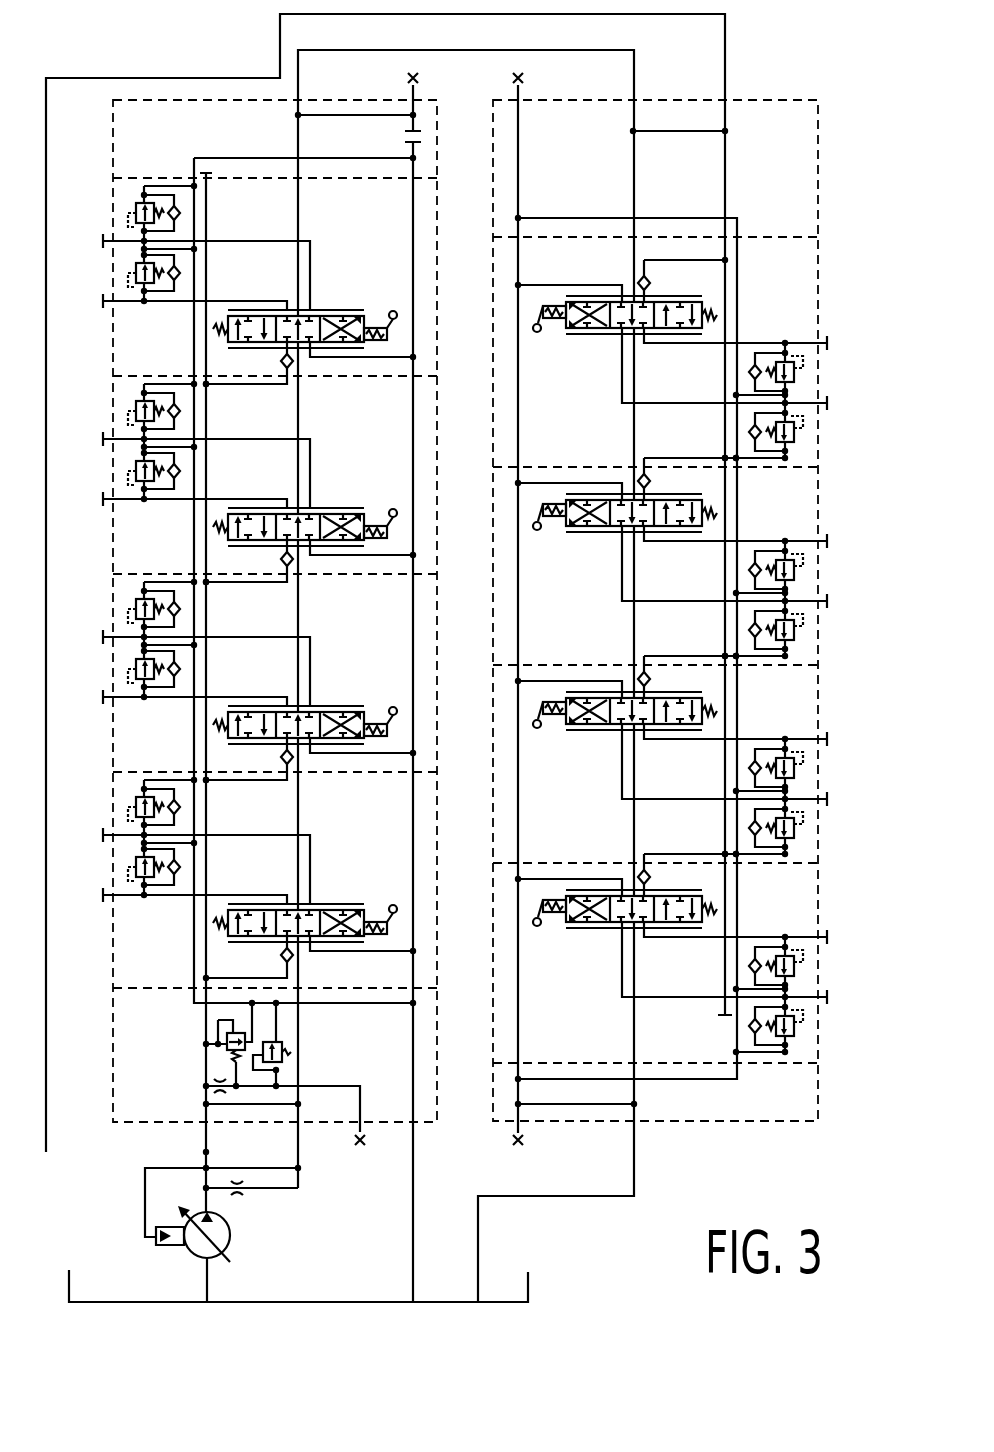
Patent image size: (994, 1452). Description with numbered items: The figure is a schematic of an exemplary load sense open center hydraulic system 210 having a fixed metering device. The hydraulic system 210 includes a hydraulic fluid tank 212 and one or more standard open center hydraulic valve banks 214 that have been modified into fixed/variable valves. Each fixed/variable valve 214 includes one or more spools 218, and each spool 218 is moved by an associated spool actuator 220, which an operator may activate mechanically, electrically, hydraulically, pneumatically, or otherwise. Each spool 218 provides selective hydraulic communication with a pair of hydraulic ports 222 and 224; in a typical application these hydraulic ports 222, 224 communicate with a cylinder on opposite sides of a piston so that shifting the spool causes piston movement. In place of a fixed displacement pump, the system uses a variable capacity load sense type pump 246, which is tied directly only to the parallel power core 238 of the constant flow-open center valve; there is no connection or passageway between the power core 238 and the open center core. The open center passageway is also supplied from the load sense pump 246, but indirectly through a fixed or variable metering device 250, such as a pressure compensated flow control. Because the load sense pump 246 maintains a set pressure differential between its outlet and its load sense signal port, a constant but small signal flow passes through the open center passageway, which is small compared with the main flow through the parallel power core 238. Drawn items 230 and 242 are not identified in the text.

The hydraulic system 210 is at (178, 49).
The hydraulic fluid tank 212 is at (527, 1275).
The open center hydraulic valve bank 214 is at (437, 240).
The spool 218 is at (289, 895).
The spool actuator 220 is at (425, 920).
The hydraulic port 222 is at (180, 927).
The hydraulic port 224 is at (191, 838).
The load check valve 230 is at (297, 960).
The parallel power core 238 is at (206, 1113).
The pressure control valve 242 is at (282, 1058).
The variable capacity pump 246 is at (186, 1254).
The metering device 250 is at (237, 1198).